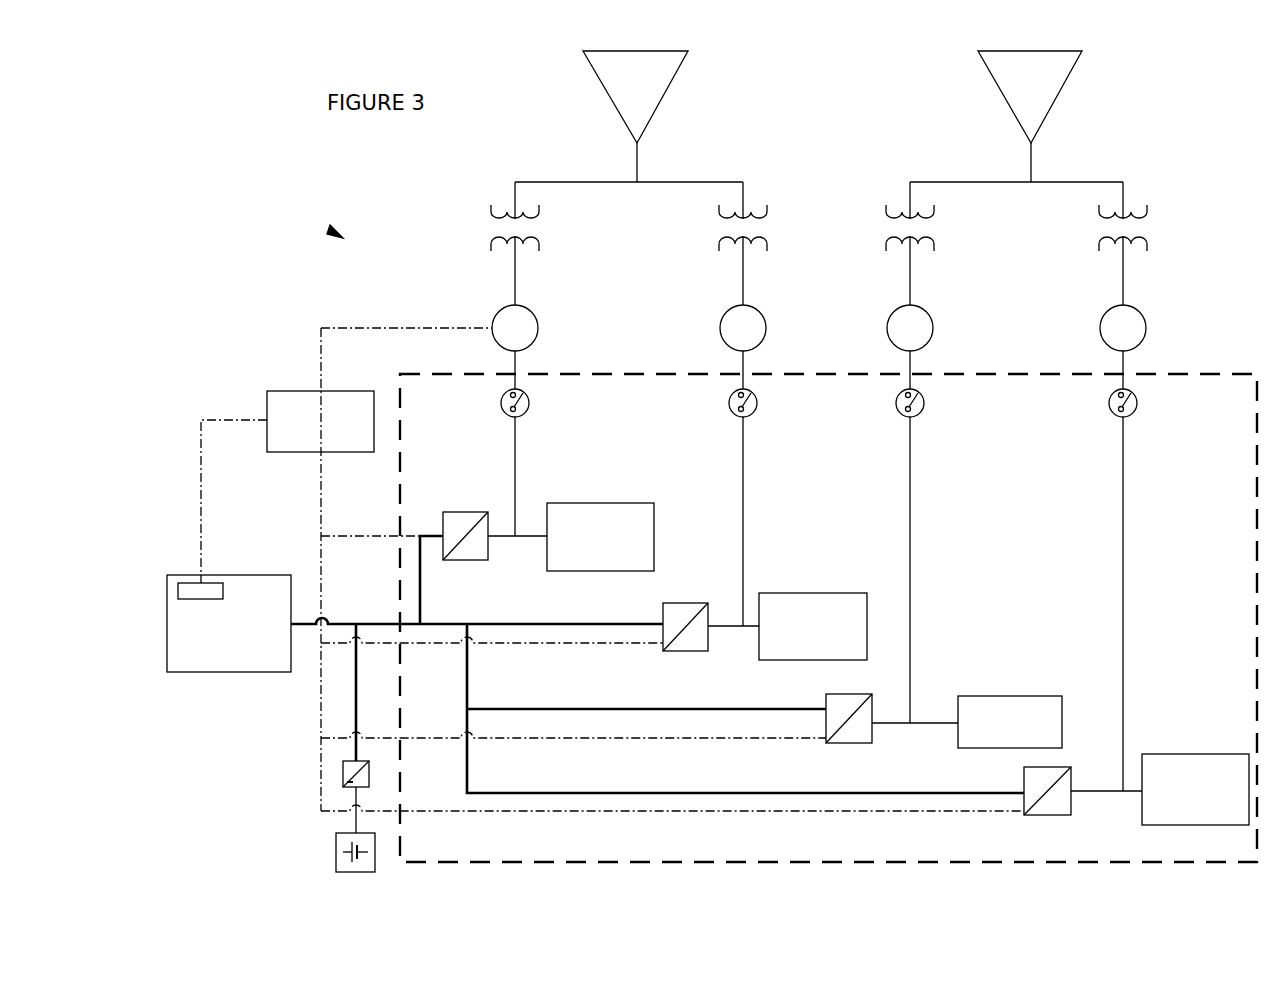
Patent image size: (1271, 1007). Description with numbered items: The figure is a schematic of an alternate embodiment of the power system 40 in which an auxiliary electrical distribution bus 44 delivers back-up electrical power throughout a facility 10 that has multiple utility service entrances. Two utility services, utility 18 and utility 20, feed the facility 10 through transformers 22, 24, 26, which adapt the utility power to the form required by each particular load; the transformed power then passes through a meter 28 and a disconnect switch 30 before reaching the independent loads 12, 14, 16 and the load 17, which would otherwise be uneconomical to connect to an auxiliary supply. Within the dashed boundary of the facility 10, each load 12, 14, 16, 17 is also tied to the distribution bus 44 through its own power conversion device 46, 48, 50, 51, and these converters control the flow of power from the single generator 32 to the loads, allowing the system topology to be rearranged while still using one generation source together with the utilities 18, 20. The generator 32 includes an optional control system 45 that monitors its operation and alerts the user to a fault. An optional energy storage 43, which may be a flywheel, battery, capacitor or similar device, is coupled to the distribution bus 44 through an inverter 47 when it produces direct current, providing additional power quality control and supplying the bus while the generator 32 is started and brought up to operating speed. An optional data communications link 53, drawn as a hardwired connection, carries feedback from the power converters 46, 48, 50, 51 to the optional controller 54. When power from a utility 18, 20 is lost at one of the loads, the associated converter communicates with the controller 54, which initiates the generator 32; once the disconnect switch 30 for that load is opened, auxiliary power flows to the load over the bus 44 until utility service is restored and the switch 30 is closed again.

The facility 10 is at (873, 862).
The load 12 is at (626, 503).
The load 14 is at (790, 593).
The load 16 is at (1042, 696).
The load 17 is at (1155, 754).
The utility 18 is at (657, 117).
The utility 20 is at (1041, 126).
The transformer 22 is at (540, 243).
The transformer 24 is at (768, 214).
The transformer 26 is at (938, 240).
The meter 28 is at (538, 328).
The disconnect switch 30 is at (530, 406).
The generator 32 is at (265, 676).
The power system 40 is at (338, 235).
The energy storage 43 is at (336, 862).
The auxiliary electrical distribution bus 44 is at (563, 624).
The control system 45 is at (223, 595).
The power conversion device 46 is at (480, 512).
The inverter 47 is at (343, 773).
The power conversion device 48 is at (688, 603).
The power conversion device 50 is at (826, 707).
The power conversion device 51 is at (1024, 783).
The data communications link 53 is at (372, 328).
The controller 54 is at (288, 391).